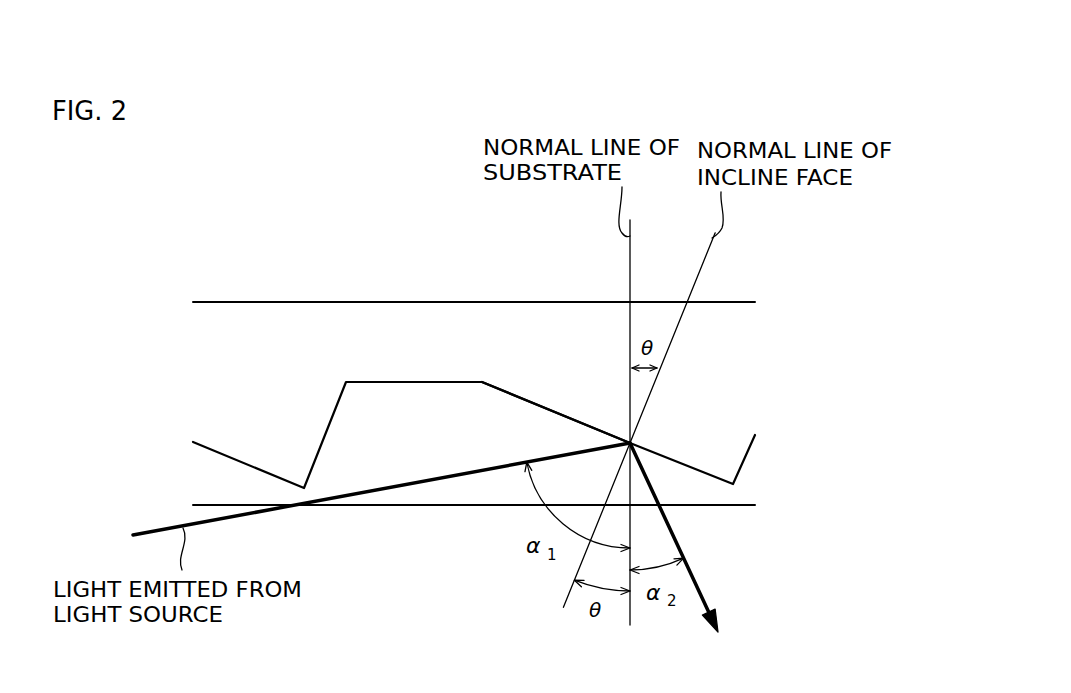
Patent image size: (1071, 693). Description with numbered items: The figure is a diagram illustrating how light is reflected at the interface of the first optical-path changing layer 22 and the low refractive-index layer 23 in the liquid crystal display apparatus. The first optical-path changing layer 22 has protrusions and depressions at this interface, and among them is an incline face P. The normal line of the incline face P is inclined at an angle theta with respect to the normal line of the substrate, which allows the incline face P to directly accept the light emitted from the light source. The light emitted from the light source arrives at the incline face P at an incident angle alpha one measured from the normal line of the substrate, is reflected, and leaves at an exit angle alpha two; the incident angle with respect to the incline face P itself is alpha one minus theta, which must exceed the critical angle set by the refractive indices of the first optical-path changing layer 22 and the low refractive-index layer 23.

The first optical-path changing layer 22 is at (460, 400).
The low refractive-index layer 23 is at (322, 315).
The incline face P is at (550, 408).